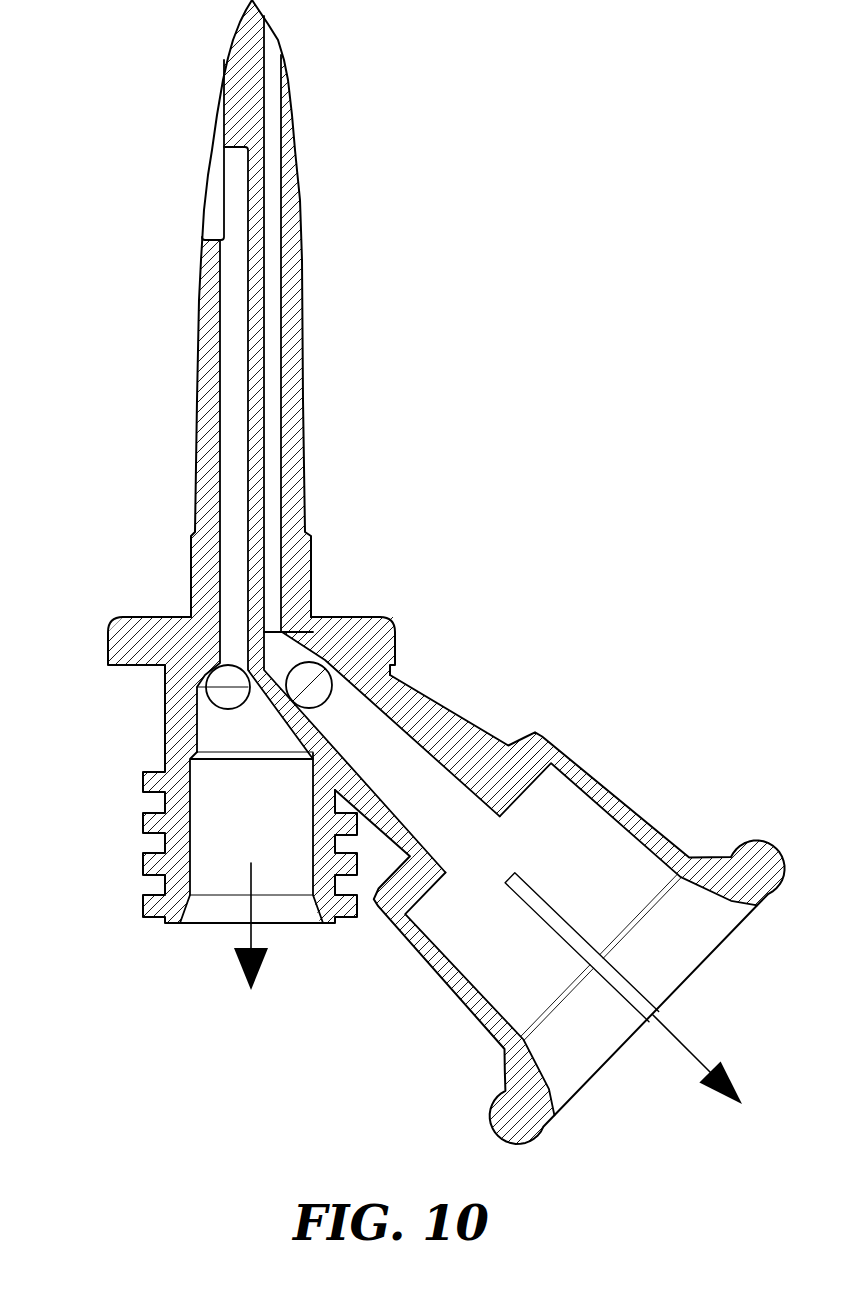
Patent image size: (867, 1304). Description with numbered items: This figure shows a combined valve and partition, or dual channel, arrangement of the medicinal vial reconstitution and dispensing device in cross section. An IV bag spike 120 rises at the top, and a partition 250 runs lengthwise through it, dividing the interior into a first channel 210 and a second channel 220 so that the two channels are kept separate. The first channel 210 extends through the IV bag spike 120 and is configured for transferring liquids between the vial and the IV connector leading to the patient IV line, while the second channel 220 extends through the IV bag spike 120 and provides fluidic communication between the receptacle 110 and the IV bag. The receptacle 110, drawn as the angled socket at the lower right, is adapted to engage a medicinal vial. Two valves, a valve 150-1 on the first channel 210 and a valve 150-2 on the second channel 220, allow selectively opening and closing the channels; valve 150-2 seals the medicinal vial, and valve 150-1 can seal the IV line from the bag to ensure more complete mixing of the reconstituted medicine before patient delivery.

The receptacle 110 is at (630, 800).
The IV bag spike 120 is at (291, 436).
The valve 150-1 is at (205, 700).
The valve 150-2 is at (333, 700).
The first channel 210 is at (233, 318).
The second channel 220 is at (272, 318).
The partition 250 is at (255, 402).